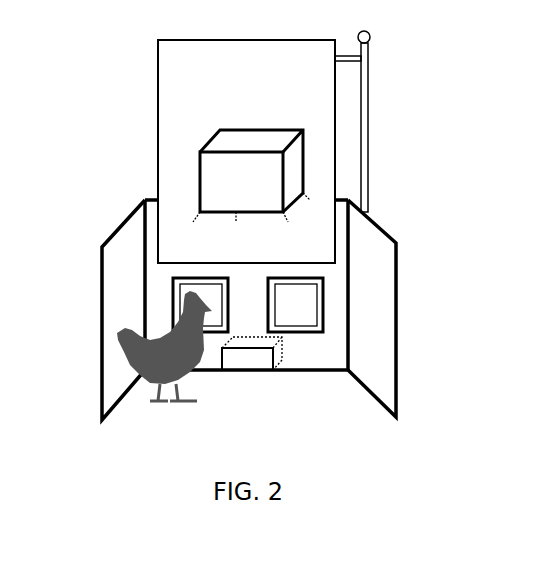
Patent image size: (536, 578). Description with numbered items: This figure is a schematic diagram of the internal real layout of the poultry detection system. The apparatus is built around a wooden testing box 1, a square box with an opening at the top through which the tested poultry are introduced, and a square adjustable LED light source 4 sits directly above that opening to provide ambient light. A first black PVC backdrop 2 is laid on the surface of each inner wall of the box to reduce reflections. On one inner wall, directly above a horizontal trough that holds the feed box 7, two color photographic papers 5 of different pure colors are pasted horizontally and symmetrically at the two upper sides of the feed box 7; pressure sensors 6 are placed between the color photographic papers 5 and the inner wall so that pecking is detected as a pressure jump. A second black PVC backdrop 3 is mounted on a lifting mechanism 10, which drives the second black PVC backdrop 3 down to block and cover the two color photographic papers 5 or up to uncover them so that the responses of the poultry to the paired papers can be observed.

The wooden testing box 1 is at (370, 285).
The first black PVC backdrop 2 is at (158, 315).
The second black PVC backdrop 3 is at (180, 95).
The square adjustable LED light source 4 is at (200, 170).
The color photographic papers 5 is at (268, 287).
The pressure sensor 6 is at (268, 327).
The feed box 7 is at (285, 353).
The lifting mechanism 10 is at (370, 150).